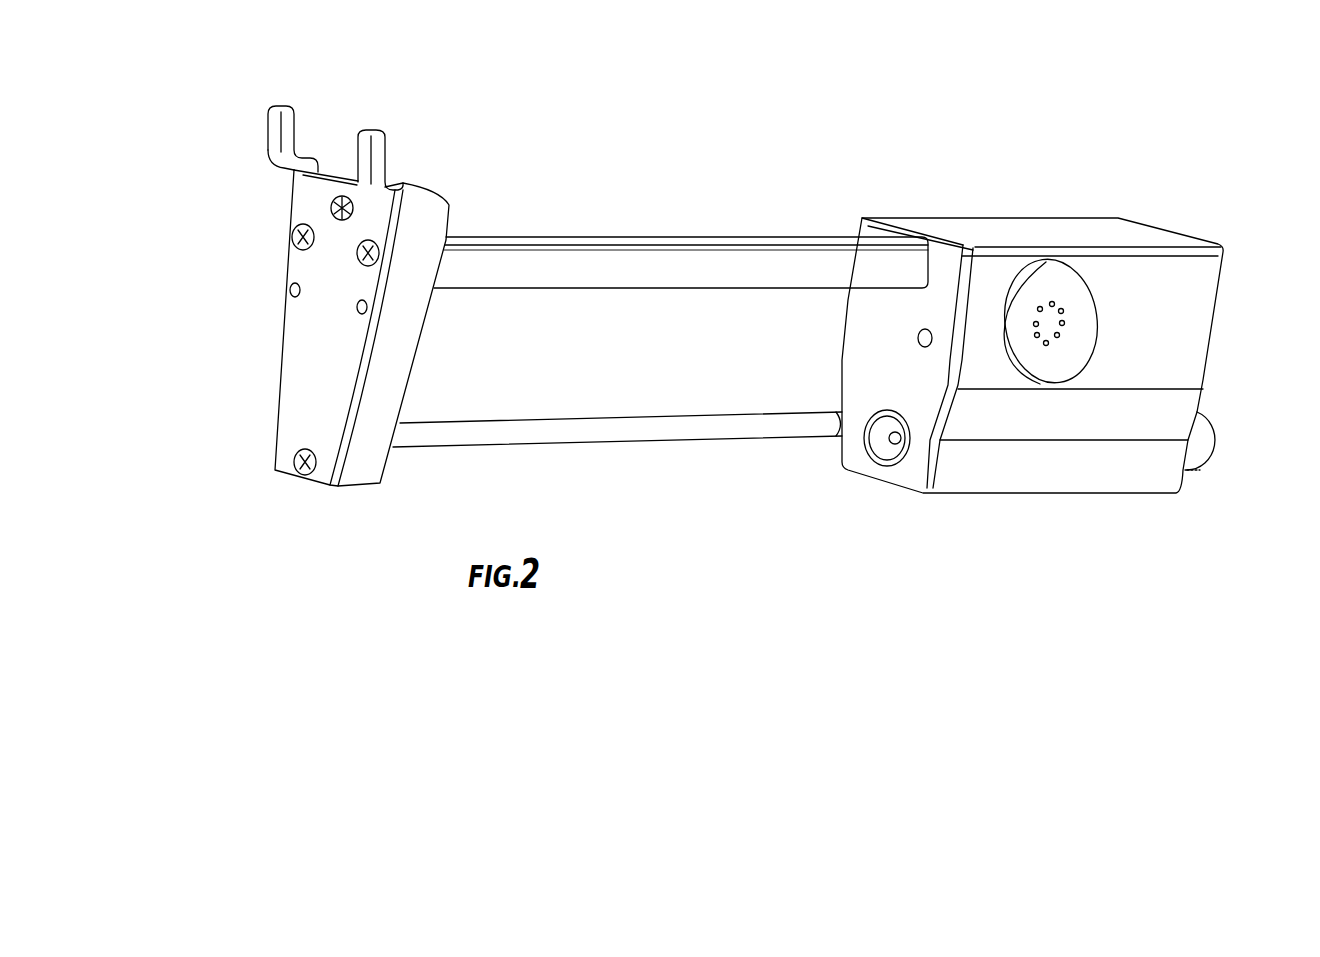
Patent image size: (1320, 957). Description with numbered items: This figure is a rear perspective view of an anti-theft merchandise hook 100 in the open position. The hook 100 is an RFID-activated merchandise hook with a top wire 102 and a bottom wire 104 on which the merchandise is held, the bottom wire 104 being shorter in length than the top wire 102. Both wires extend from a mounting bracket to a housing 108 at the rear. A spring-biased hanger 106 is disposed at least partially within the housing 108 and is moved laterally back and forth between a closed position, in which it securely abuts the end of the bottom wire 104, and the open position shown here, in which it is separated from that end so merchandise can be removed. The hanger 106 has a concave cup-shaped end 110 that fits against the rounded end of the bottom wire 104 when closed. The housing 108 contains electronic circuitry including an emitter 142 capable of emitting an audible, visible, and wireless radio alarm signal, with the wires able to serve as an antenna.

The anti-theft merchandise hook 100 is at (988, 78).
The top wire 102 is at (653, 239).
The bottom wire 104 is at (624, 443).
The spring-biased hanger 106 is at (1222, 443).
The housing 108 is at (1175, 239).
The concave cup-shaped end 110 is at (870, 467).
The emitter 142 is at (1060, 295).